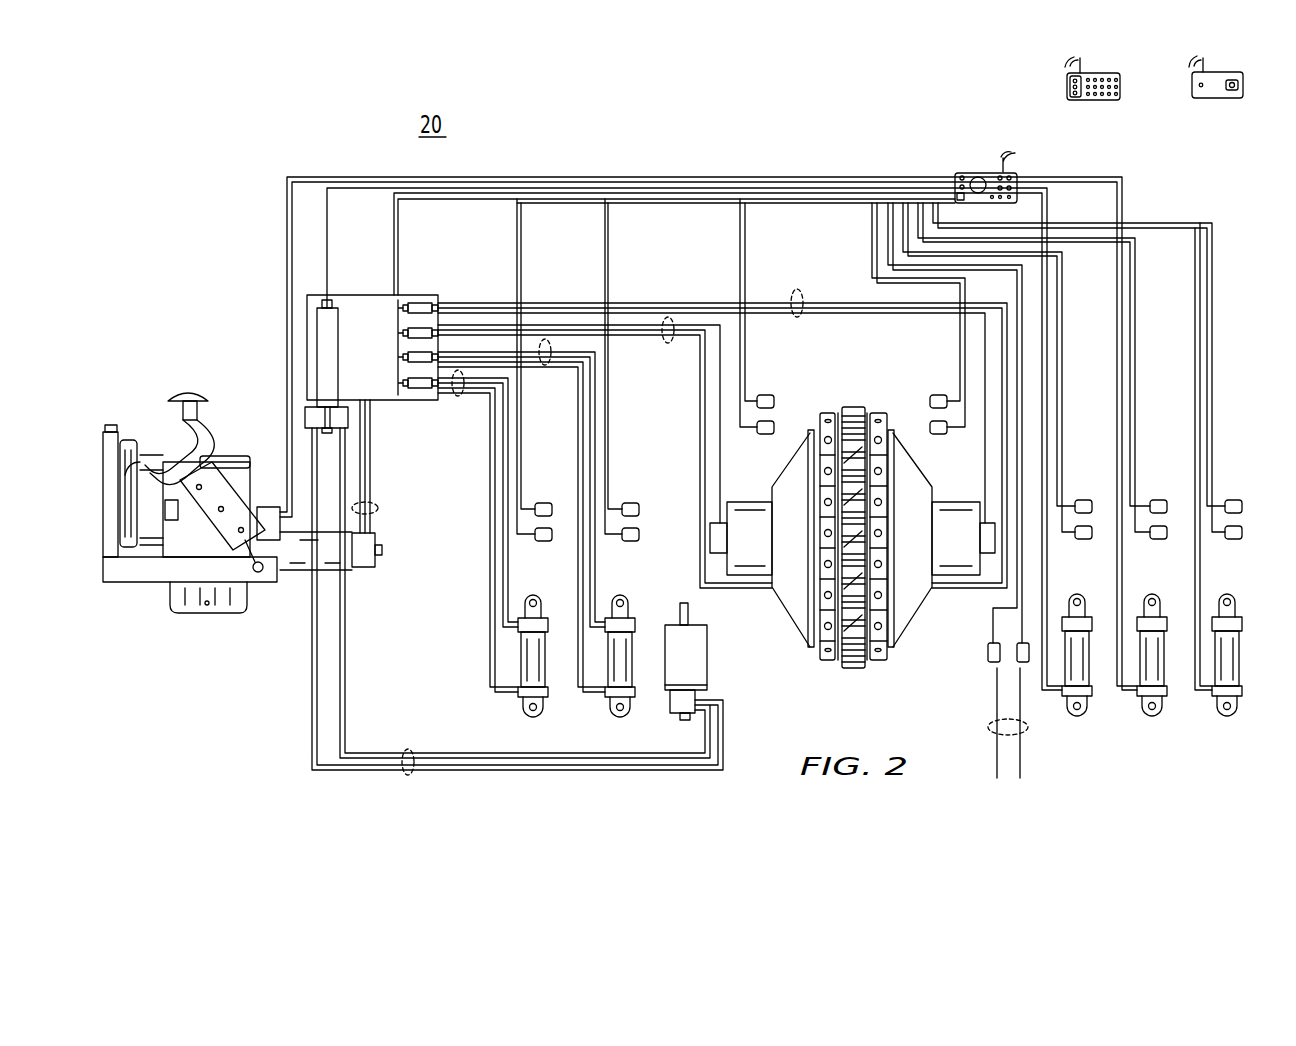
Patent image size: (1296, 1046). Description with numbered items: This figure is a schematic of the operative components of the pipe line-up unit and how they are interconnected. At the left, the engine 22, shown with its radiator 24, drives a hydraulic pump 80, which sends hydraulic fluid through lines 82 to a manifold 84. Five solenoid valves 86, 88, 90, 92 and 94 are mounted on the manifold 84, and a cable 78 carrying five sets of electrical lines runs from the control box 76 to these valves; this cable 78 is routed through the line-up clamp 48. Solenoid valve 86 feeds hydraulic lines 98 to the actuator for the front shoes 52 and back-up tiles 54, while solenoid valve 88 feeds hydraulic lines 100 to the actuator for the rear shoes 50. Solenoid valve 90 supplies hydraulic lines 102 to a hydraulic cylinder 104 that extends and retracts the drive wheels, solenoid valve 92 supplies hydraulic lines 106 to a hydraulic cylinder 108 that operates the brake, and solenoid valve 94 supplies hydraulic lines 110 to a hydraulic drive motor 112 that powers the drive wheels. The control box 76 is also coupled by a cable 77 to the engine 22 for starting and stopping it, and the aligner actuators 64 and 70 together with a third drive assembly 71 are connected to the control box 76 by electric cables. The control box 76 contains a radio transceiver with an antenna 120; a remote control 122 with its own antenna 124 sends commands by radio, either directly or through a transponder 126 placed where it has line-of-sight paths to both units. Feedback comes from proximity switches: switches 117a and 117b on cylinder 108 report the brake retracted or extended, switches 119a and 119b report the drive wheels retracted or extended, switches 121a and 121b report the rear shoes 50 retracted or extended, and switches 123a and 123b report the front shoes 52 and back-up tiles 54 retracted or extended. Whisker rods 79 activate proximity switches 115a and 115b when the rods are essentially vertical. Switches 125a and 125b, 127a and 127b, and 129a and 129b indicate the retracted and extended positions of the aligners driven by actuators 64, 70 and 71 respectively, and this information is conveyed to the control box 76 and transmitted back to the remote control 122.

The engine 22 is at (162, 372).
The radiator 24 is at (108, 426).
The line-up clamp 48 is at (860, 395).
The rear shoes 50 is at (828, 666).
The front shoes 52 is at (880, 666).
The back-up tiles 54 is at (853, 672).
The actuator 64 is at (1091, 688).
The actuator 70 is at (1166, 688).
The third drive assembly 71 is at (1241, 688).
The control box 76 is at (968, 172).
The cable 77 is at (287, 244).
The cable 78 is at (483, 197).
The whisker rods 79 is at (1028, 732).
The hydraulic pump 80 is at (293, 572).
The lines 82 is at (378, 508).
The manifold 84 is at (385, 297).
The solenoid valve 86 is at (430, 301).
The solenoid valve 88 is at (403, 333).
The solenoid valve 90 is at (403, 357).
The solenoid valve 92 is at (430, 403).
The solenoid valve 94 is at (317, 345).
The hydraulic lines 98 is at (797, 290).
The hydraulic lines 100 is at (668, 344).
The hydraulic lines 102 is at (545, 366).
The hydraulic cylinder 104 is at (634, 690).
The hydraulic lines 106 is at (460, 397).
The hydraulic cylinder 108 is at (547, 690).
The hydraulic lines 110 is at (408, 750).
The hydraulic drive motor 112 is at (707, 662).
The proximity switch 115a is at (1017, 655).
The proximity switch 115b is at (988, 652).
The proximity switch 117a is at (543, 503).
The proximity switch 117b is at (543, 541).
The proximity switch 119a is at (630, 503).
The proximity switch 119b is at (630, 541).
The antenna 120 is at (993, 172).
The proximity switch 121a is at (765, 395).
The proximity switch 121b is at (765, 434).
The remote control 122 is at (1093, 100).
The proximity switch 123a is at (938, 395).
The proximity switch 123b is at (938, 434).
The antenna 124 is at (1083, 66).
The proximity switch 125a is at (1083, 500).
The proximity switch 125b is at (1083, 539).
The transponder 126 is at (1222, 72).
The proximity switch 127a is at (1158, 500).
The proximity switch 127b is at (1158, 539).
The proximity switch 129a is at (1233, 500).
The proximity switch 129b is at (1233, 539).